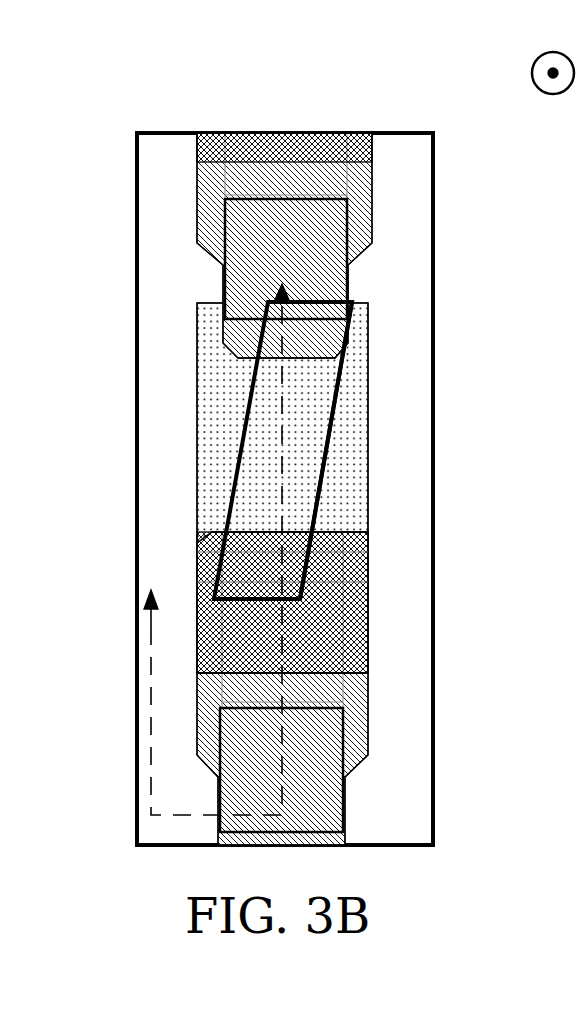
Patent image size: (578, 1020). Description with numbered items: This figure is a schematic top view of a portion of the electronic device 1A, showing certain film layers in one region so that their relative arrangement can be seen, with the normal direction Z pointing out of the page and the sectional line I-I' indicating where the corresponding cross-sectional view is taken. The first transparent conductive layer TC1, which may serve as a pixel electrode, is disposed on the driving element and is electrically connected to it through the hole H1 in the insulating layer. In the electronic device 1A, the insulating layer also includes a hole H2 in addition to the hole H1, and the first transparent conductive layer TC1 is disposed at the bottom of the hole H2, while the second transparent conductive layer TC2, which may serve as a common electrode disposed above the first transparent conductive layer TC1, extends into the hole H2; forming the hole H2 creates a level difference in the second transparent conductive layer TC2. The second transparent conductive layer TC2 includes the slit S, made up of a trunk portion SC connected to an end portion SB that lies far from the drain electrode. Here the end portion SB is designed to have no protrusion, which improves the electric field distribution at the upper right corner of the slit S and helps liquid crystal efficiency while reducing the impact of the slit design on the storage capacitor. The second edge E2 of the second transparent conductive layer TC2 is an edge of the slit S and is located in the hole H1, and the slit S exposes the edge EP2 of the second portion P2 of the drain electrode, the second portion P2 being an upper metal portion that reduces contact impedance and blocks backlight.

The normal direction Z is at (553, 54).
The second transparent conductive layer TC2 is at (139, 328).
The first transparent conductive layer TC1 is at (197, 376).
The hole H1 is at (214, 140).
The hole H2 is at (347, 228).
The second portion P2 is at (197, 177).
The edge of the second portion EP2 is at (291, 538).
The second edge E2 is at (295, 608).
The slit S is at (383, 442).
The end portion SB is at (372, 294).
The trunk portion SC is at (355, 386).
The sectional line I-I' I is at (217, 534).
The electronic device 1A is at (566, 879).